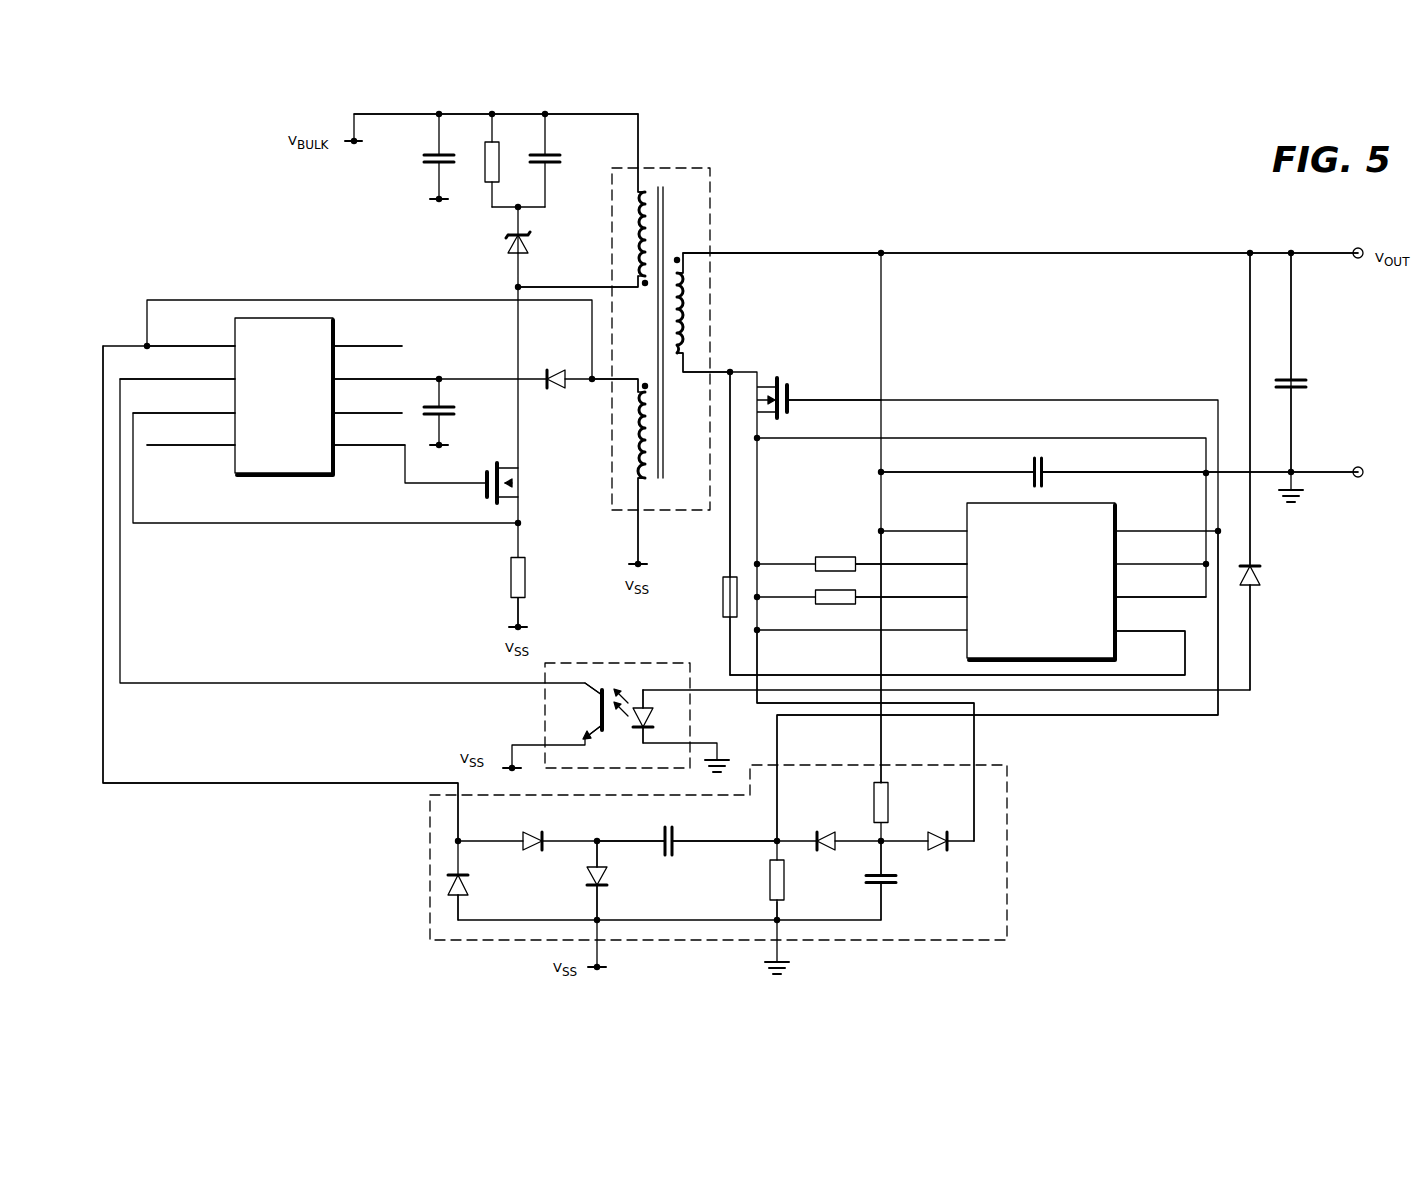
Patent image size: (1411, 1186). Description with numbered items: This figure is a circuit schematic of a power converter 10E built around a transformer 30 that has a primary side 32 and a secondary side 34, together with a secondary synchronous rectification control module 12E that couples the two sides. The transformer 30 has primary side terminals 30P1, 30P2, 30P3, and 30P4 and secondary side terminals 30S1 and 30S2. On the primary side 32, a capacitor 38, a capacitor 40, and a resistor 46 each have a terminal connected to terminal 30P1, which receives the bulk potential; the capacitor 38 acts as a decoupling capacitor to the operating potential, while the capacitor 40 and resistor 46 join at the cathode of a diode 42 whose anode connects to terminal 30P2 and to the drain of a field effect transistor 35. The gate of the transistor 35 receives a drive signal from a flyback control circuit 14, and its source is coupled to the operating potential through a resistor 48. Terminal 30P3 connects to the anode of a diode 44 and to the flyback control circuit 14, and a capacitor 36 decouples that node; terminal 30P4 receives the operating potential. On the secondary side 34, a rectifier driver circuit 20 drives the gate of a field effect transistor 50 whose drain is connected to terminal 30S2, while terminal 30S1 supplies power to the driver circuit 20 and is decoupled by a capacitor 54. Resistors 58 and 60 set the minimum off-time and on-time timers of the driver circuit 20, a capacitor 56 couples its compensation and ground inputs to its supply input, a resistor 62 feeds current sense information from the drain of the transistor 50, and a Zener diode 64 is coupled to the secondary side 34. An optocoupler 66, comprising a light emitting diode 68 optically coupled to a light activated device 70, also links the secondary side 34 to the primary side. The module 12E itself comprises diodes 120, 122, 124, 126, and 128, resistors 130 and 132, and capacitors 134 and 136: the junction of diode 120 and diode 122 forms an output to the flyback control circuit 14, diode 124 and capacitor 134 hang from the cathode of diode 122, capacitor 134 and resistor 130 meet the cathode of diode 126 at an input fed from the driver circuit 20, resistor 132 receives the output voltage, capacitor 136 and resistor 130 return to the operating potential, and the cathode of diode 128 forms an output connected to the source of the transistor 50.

The power converter 10E is at (1240, 199).
The secondary synchronous rectification control module 12E is at (430, 885).
The flyback control circuit 14 is at (258, 478).
The rectifier driver circuit 20 is at (1095, 505).
The transformer 30 is at (675, 168).
The primary side terminal 30P1 is at (628, 118).
The primary side terminal 30P2 is at (600, 284).
The primary side terminal 30P3 is at (605, 385).
The primary side terminal 30P4 is at (638, 530).
The secondary side terminal 30S1 is at (720, 253).
The secondary side terminal 30S2 is at (722, 370).
The primary side 32 is at (352, 248).
The secondary side 34 is at (735, 196).
The field effect transistor 35 is at (508, 470).
The energy storage element 36 is at (455, 408).
The energy storage element 38 is at (425, 157).
The energy storage element 40 is at (560, 165).
The diode 42 is at (508, 237).
The diode 44 is at (547, 368).
The impedance element 46 is at (500, 160).
The impedance element 48 is at (511, 577).
The field effect transistor 50 is at (790, 386).
The energy storage element 54 is at (1300, 380).
The energy storage element 56 is at (1030, 470).
The impedance element 58 is at (820, 557).
The impedance element 60 is at (820, 604).
The impedance element 62 is at (723, 615).
The Zener diode 64 is at (1258, 566).
The optocoupler 66 is at (655, 663).
The light emitting diode 68 is at (642, 735).
The light activated device 70 is at (606, 698).
The diode 120 is at (465, 877).
The diode 122 is at (542, 834).
The diode 124 is at (604, 887).
The diode 126 is at (819, 833).
The diode 128 is at (947, 850).
The impedance element 130 is at (785, 878).
The impedance element 132 is at (888, 800).
The energy storage element 134 is at (672, 856).
The energy storage element 136 is at (897, 880).